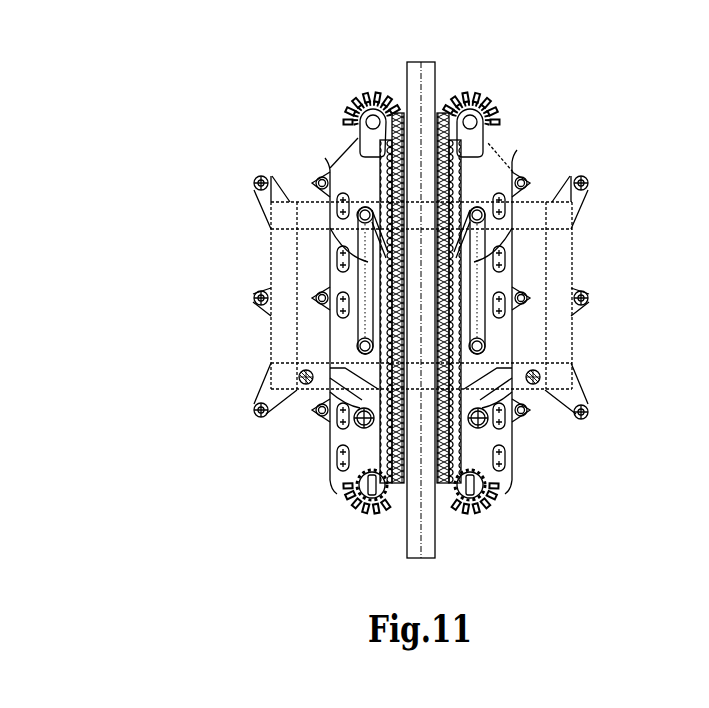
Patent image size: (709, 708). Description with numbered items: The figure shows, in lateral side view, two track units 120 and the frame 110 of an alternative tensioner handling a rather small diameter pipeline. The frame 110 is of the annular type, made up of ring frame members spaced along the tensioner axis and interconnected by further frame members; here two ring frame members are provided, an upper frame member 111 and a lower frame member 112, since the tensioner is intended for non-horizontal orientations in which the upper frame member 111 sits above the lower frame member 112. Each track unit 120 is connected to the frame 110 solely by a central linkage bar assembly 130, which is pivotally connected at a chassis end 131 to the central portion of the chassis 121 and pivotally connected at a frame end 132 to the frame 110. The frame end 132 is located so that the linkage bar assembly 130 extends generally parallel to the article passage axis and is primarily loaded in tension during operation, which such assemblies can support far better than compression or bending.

The frame 110 is at (583, 252).
The upper frame member 111 is at (546, 203).
The lower frame member 112 is at (523, 393).
The track unit 120 is at (333, 98).
The chassis 121 is at (355, 167).
The central linkage bar assembly 130 is at (365, 278).
The chassis end pivot 131 is at (358, 347).
The frame end pivot 132 is at (358, 213).